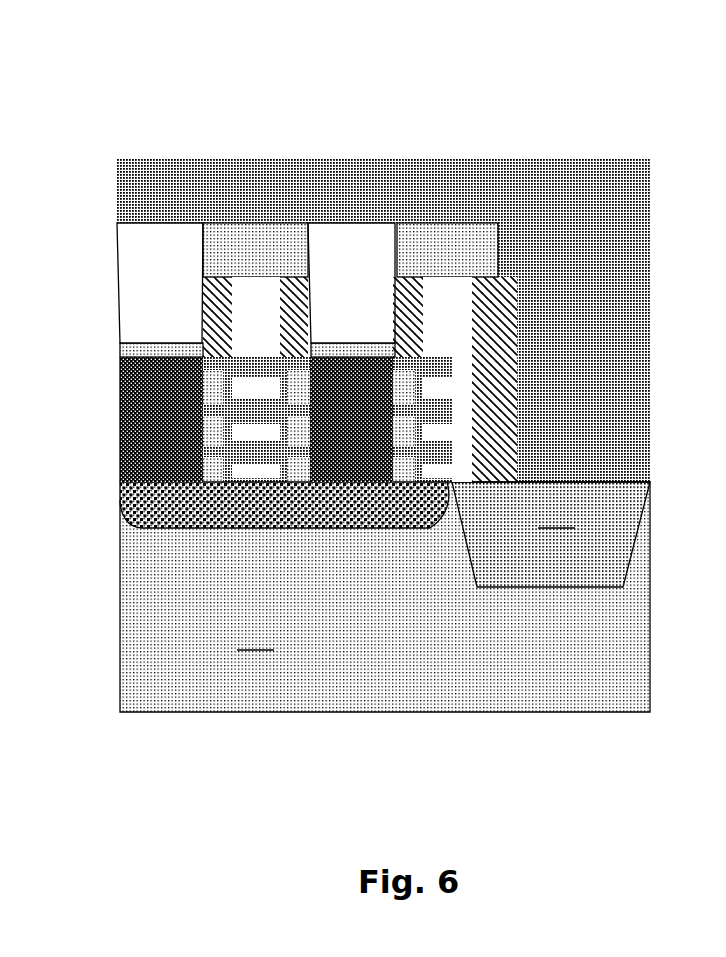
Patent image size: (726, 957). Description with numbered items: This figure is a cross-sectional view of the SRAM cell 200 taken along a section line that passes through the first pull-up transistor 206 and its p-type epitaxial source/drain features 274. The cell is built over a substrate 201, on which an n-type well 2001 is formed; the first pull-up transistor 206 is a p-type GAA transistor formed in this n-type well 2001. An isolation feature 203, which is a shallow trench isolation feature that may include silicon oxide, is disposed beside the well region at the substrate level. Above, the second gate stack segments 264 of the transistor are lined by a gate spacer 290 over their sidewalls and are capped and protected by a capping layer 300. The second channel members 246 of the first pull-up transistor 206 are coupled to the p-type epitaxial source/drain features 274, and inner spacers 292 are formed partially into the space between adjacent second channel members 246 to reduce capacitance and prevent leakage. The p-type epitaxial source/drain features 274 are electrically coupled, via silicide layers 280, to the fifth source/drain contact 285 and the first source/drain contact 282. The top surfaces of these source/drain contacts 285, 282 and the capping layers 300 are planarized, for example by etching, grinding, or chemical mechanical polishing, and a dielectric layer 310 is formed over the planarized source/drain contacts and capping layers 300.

The SRAM cell 200 is at (48, 92).
The substrate 201 is at (385, 597).
The isolation feature 203 is at (551, 534).
The first pull-up transistor 206 is at (259, 186).
The second channel members 246 is at (200, 408).
The second gate stack segments 264 is at (250, 313).
The p-type epitaxial source/drain features 274 is at (132, 458).
The silicide layers 280 is at (120, 350).
The first source/drain contact 282 is at (355, 238).
The fifth source/drain contact 285 is at (172, 240).
The gate spacer 290 is at (213, 328).
The inner spacers 292 is at (210, 387).
The capping layer 300 is at (445, 250).
The dielectric layer 310 is at (545, 180).
The n-type well 2001 is at (162, 506).